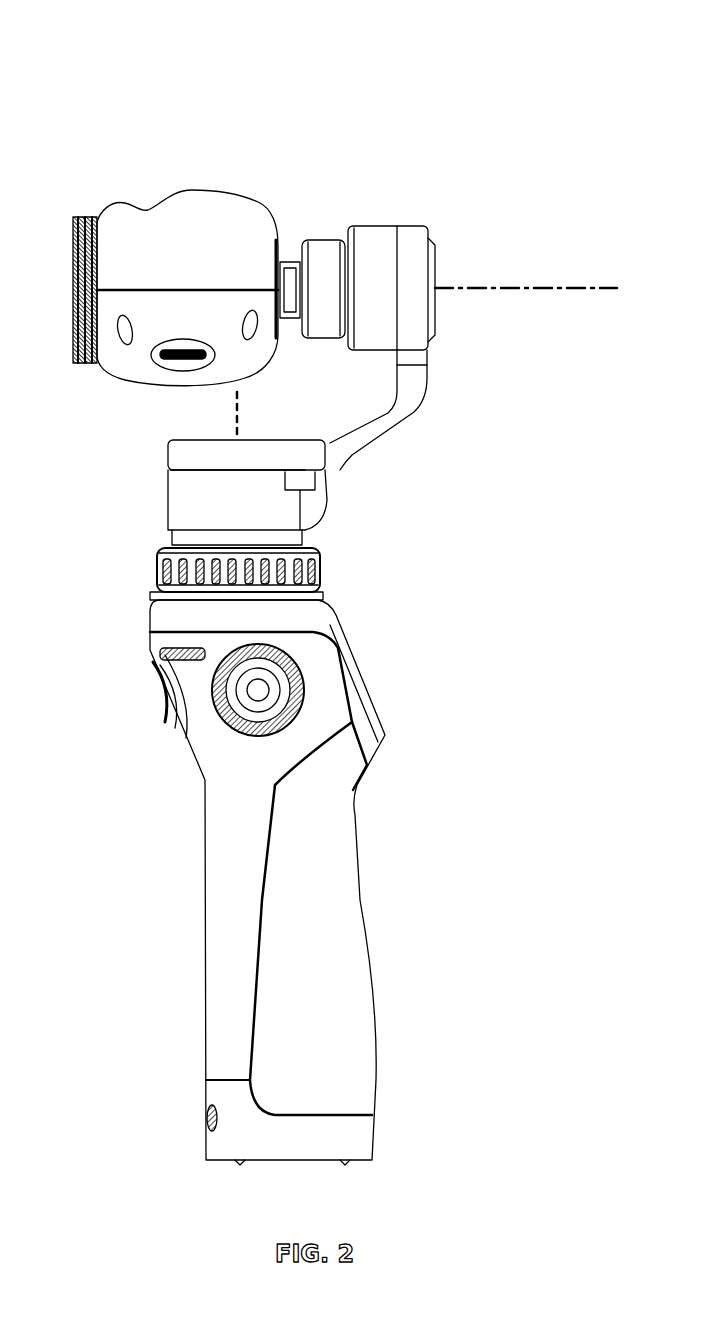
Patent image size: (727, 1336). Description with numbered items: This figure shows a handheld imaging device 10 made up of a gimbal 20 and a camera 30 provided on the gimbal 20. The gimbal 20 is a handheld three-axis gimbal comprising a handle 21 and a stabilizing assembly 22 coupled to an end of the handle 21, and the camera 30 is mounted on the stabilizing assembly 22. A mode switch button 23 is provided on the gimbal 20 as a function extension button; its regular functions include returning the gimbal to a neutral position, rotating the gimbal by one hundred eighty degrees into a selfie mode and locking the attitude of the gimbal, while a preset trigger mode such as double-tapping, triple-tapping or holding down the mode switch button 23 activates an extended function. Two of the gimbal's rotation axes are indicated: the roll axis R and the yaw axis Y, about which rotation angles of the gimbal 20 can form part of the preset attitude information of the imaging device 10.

The imaging device 10 is at (146, 44).
The gimbal 20 is at (421, 636).
The handle 21 is at (333, 888).
The stabilizing assembly 22 is at (358, 457).
The mode switch button 23 is at (162, 688).
The camera 30 is at (203, 220).
The roll axis R is at (530, 288).
The yaw axis Y is at (240, 421).